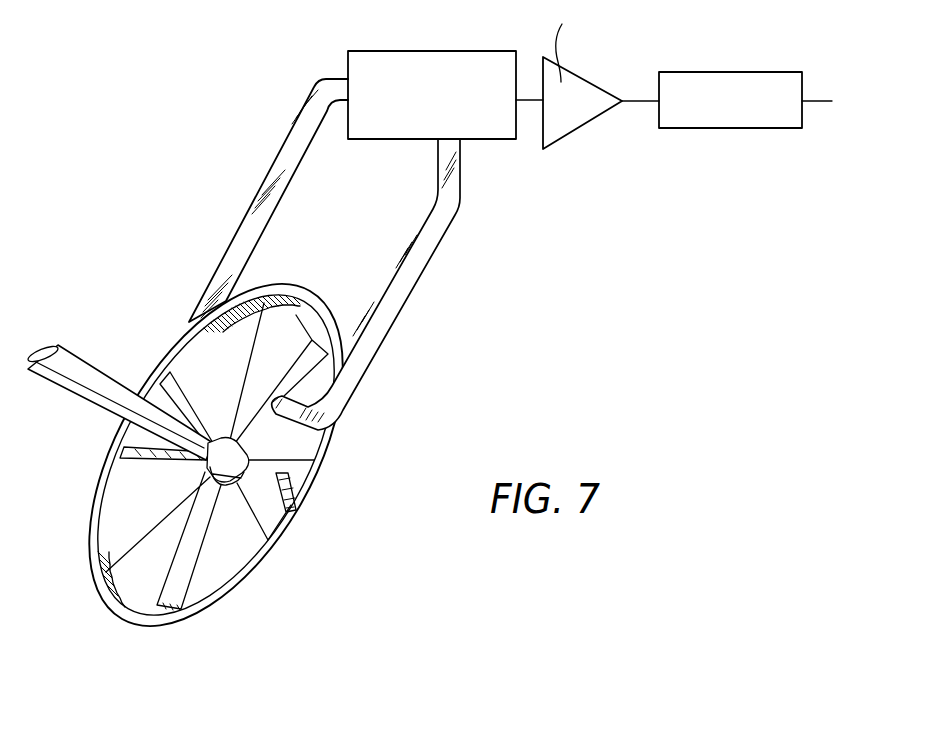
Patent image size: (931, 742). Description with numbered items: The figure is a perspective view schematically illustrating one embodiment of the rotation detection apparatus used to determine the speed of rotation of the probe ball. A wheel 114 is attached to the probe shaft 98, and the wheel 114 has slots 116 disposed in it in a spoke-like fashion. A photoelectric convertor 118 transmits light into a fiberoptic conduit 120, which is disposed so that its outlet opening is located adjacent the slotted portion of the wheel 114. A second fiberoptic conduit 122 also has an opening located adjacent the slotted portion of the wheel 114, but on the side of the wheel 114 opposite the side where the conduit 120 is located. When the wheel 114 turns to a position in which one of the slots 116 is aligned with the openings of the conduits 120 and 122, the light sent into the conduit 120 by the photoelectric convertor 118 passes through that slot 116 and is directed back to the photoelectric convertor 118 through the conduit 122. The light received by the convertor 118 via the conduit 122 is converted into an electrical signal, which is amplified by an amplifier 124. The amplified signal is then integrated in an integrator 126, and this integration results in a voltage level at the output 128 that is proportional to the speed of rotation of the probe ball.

The probe shaft 98 is at (113, 368).
The wheel 114 is at (93, 560).
The slots 116 is at (272, 473).
The photoelectric convertor 118 is at (373, 139).
The fiberoptic conduit 120 is at (243, 250).
The fiberoptic conduit 122 is at (428, 228).
The amplifier 124 is at (572, 135).
The integrator 126 is at (683, 128).
The output 128 is at (808, 103).